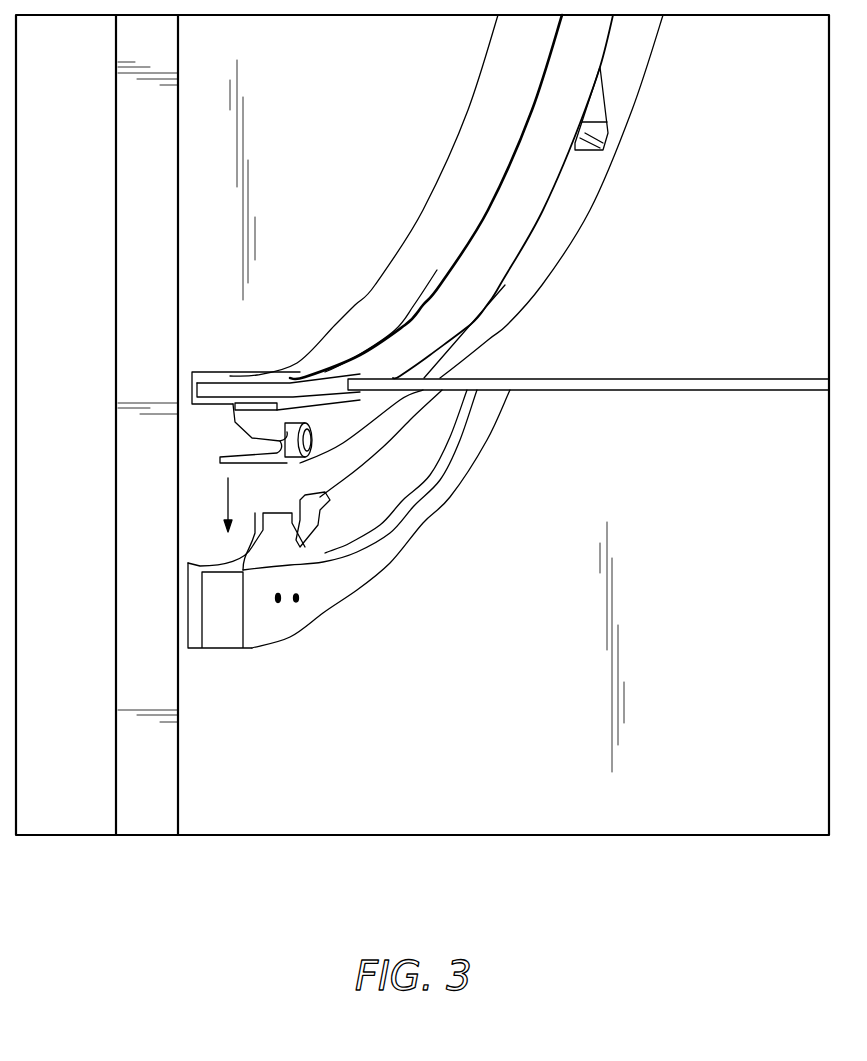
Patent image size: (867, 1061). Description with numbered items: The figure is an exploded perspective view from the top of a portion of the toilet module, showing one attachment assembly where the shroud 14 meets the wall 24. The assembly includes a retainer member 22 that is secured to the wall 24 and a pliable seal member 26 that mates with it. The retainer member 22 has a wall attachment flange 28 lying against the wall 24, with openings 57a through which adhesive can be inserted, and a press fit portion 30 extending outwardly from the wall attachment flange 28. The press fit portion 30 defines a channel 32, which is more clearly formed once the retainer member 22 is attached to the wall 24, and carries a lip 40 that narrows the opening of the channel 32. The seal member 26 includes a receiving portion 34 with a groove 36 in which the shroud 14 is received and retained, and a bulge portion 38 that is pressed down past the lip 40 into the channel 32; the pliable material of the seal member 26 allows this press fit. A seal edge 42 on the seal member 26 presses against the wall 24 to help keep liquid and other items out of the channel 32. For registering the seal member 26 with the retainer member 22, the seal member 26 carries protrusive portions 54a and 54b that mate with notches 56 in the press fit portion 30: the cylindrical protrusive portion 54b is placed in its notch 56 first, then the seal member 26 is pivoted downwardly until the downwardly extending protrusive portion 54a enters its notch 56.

The shroud 14 is at (660, 391).
The retainer member 22 is at (150, 575).
The wall 24 is at (322, 149).
The seal member 26 is at (490, 108).
The wall attachment flange 28 is at (360, 587).
The press fit portion 30 is at (435, 468).
The channel 32 is at (235, 545).
The receiving portion 34 is at (205, 372).
The groove 36 is at (230, 383).
The bulge portion 38 is at (370, 418).
The lip 40 is at (320, 513).
The seal edge 42 is at (190, 371).
The downwardly extending protrusive portion 54a is at (598, 133).
The cylindrical protrusive portion 54b is at (310, 443).
The notch 56 is at (318, 515).
The opening 57a is at (296, 598).